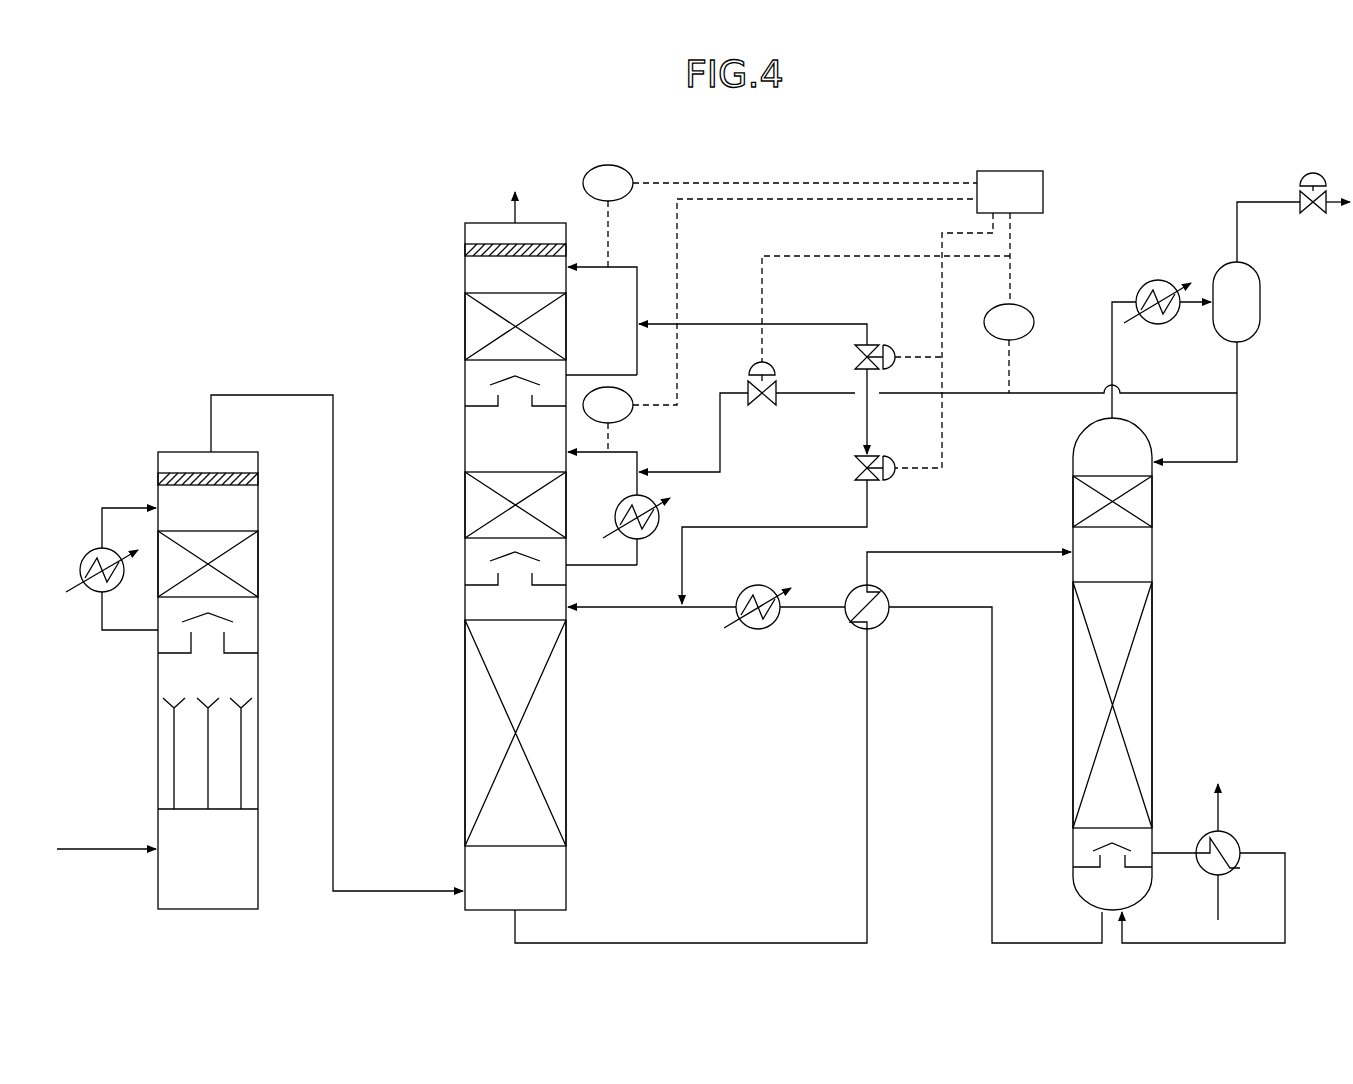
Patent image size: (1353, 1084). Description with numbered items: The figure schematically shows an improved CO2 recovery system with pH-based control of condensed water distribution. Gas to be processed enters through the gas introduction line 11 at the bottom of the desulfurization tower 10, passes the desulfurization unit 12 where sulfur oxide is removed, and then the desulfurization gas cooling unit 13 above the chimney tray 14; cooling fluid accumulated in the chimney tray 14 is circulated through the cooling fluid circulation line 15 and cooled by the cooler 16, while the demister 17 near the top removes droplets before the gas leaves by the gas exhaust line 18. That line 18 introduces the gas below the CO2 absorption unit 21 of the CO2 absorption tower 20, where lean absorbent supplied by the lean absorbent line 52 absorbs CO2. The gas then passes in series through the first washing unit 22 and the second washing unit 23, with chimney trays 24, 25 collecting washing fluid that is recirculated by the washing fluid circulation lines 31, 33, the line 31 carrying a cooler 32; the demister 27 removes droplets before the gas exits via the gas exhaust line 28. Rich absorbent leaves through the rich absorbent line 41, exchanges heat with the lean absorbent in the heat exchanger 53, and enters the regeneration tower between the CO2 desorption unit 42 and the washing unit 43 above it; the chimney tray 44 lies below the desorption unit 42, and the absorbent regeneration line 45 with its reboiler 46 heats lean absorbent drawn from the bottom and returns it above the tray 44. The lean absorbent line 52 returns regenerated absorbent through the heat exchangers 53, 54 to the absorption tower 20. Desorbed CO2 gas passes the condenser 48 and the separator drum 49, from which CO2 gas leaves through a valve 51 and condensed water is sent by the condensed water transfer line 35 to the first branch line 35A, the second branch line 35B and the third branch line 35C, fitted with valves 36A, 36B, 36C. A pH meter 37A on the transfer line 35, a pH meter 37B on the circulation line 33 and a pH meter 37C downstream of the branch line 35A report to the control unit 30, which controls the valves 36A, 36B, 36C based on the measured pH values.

The desulfurization tower 10 is at (182, 448).
The gas introduction line 11 is at (100, 853).
The desulfurization unit 12 is at (258, 774).
The desulfurization gas cooling unit 13 is at (248, 568).
The chimney tray 14 is at (240, 655).
The cooling fluid circulation line 15 is at (130, 632).
The cooler 16 is at (88, 554).
The demister 17 is at (240, 478).
The gas exhaust line 18 is at (335, 694).
The CO2 absorption tower 20 is at (540, 221).
The CO2 absorption unit 21 is at (472, 762).
The first washing unit 22 is at (482, 518).
The second washing unit 23 is at (482, 335).
The chimney tray 24 is at (482, 590).
The chimney tray 25 is at (482, 400).
The demister 27 is at (478, 257).
The gas exhaust line 28 is at (506, 201).
The control unit 30 is at (1045, 191).
The washing fluid circulation line 31 is at (612, 566).
The cooler 32 is at (662, 522).
The washing fluid circulation line 33 is at (632, 266).
The condensed water transfer line 35 is at (1028, 395).
The first branch line 35A is at (722, 441).
The second branch line 35B is at (713, 322).
The third branch line 35C is at (805, 526).
The valve 36A is at (768, 366).
The valve 36B is at (880, 346).
The valve 36C is at (888, 481).
The pH meter 37A is at (1020, 308).
The pH meter 37B is at (605, 164).
The pH meter 37C is at (632, 420).
The rich absorbent line 41 is at (870, 829).
The CO2 desorption unit 42 is at (1148, 705).
The washing unit 43 is at (1148, 505).
The chimney tray 44 is at (1088, 880).
The absorbent regeneration line 45 is at (1288, 900).
The reboiler 46 is at (1238, 833).
The condenser 48 is at (1155, 280).
The separator drum 49 is at (1262, 301).
The valve 51 is at (1312, 173).
The lean absorbent line 52 is at (990, 739).
The heat exchanger 53 is at (885, 619).
The heat exchanger 54 is at (770, 631).